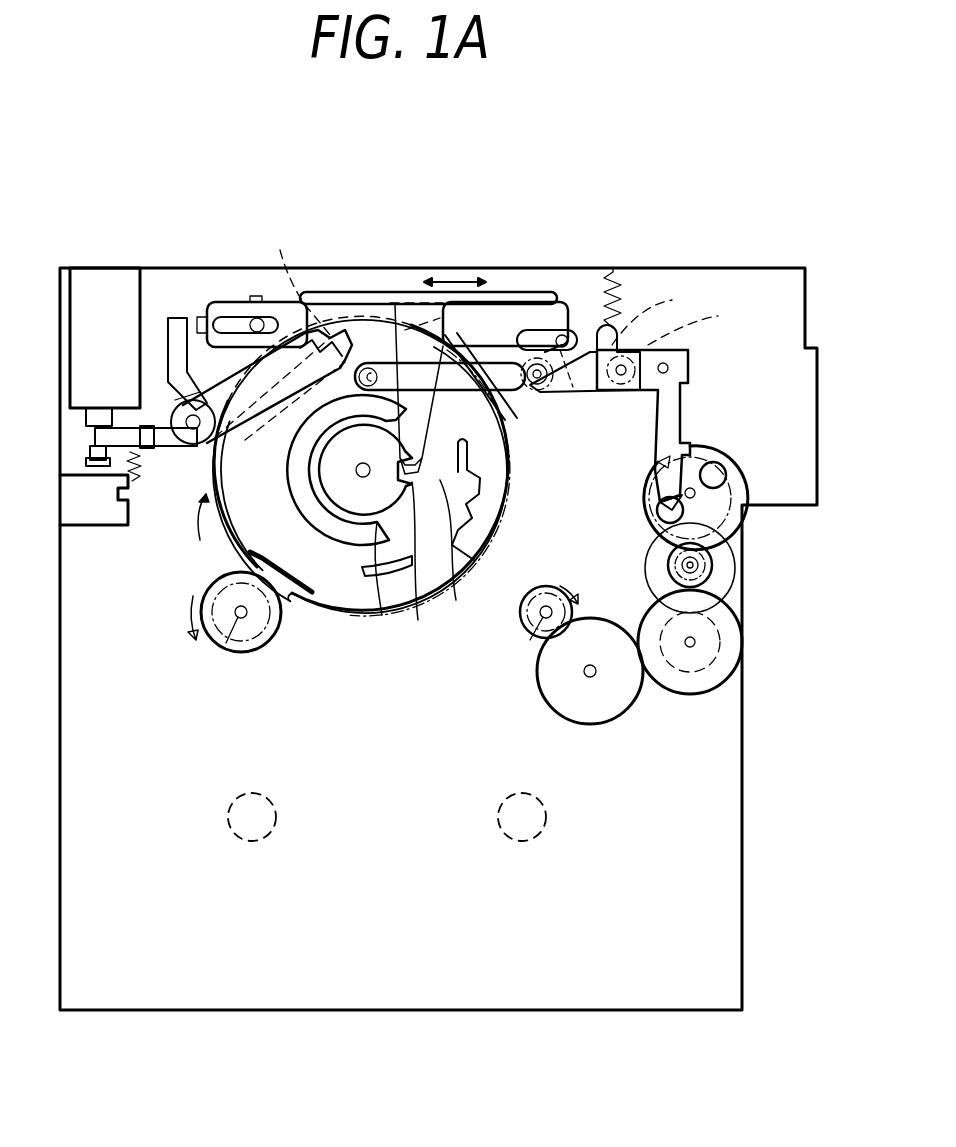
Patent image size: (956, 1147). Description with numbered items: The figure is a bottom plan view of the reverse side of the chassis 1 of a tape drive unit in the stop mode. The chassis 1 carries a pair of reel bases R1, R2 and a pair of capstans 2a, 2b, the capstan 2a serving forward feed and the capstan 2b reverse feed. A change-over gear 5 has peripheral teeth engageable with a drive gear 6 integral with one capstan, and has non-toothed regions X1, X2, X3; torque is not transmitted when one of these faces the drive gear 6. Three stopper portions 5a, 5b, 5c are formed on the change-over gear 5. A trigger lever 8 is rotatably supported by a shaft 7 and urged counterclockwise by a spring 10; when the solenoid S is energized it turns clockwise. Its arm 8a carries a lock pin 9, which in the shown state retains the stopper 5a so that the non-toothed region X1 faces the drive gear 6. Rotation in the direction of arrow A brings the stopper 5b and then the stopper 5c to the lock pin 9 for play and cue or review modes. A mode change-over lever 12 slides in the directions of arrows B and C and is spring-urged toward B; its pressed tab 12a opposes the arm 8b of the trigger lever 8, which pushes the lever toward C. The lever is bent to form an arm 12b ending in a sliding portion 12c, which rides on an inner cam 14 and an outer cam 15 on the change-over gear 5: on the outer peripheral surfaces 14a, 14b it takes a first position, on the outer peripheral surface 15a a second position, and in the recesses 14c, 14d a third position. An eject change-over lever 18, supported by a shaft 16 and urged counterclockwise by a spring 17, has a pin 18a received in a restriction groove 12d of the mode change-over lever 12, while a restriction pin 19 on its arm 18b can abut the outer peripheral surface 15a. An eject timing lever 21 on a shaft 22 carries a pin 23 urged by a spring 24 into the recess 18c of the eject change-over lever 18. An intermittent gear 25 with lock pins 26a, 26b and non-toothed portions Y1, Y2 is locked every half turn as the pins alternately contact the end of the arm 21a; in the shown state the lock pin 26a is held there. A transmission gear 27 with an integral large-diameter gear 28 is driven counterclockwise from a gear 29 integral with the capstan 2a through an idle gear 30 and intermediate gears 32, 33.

The chassis 1 is at (742, 885).
The solenoid S is at (92, 283).
The spring 10 is at (146, 482).
The trigger lever 8 is at (188, 444).
The shaft 7 is at (178, 400).
The arm 8b is at (178, 318).
The arm 8a is at (215, 400).
The lock pin 9 is at (296, 280).
The pressed tab 12a is at (218, 330).
The non-toothed region X3 is at (322, 320).
The non-toothed region X2 is at (380, 320).
The mode change-over lever 12 is at (520, 292).
The arm 18b is at (479, 361).
The sliding portion 12c is at (430, 465).
The restriction groove 12d is at (555, 330).
The eject change-over lever 18 is at (610, 330).
The pin 18a is at (550, 335).
The spring 17 is at (618, 285).
The spring 24 is at (622, 385).
The pin 23 is at (659, 314).
The recess 18c is at (707, 322).
The shaft 22 is at (670, 368).
The eject timing lever 21 is at (685, 405).
The arm 21a is at (660, 495).
The shaft 16 is at (540, 392).
The restriction pin 19 is at (358, 378).
The arm 12b is at (528, 390).
The arrow B is at (403, 284).
The arrow C is at (501, 284).
The change-over gear 5 is at (240, 570).
The stopper portion 5a is at (268, 380).
The stopper portion 5b is at (470, 562).
The stopper portion 5c is at (480, 500).
The outer peripheral surface 14a is at (306, 530).
The outer cam 15 is at (348, 610).
The outer peripheral surface 15a is at (286, 488).
The inner cam 14 is at (385, 610).
The recess 14d is at (395, 452).
The recess 14c is at (436, 620).
The outer peripheral surface 14b is at (478, 540).
The arrow A is at (193, 524).
The drive gear 6 is at (262, 652).
The capstan 2b is at (226, 645).
The non-toothed region X1 is at (278, 580).
The gear 29 is at (520, 615).
The capstan 2a is at (531, 640).
The idle gear 30 is at (640, 690).
The intermediate gear 32 is at (735, 676).
The intermediate gear 33 is at (722, 642).
The large-diameter gear 28 is at (646, 566).
The transmission gear 27 is at (722, 598).
The non-toothed portion Y1 is at (714, 570).
The intermittent gear 25 is at (745, 515).
The lock pin 26b is at (726, 478).
The lock pin 26a is at (660, 520).
The non-toothed portion Y2 is at (712, 458).
The reel base R2 is at (278, 822).
The reel base R1 is at (548, 822).